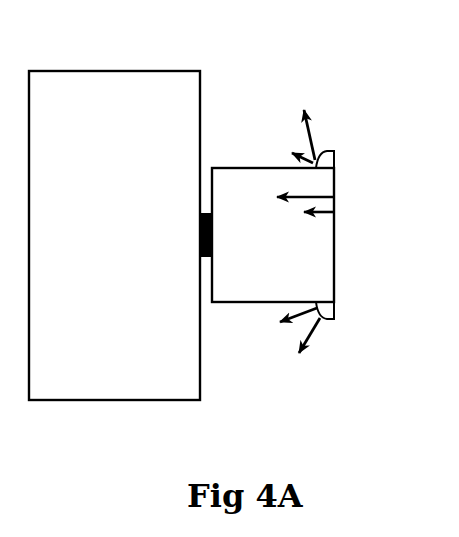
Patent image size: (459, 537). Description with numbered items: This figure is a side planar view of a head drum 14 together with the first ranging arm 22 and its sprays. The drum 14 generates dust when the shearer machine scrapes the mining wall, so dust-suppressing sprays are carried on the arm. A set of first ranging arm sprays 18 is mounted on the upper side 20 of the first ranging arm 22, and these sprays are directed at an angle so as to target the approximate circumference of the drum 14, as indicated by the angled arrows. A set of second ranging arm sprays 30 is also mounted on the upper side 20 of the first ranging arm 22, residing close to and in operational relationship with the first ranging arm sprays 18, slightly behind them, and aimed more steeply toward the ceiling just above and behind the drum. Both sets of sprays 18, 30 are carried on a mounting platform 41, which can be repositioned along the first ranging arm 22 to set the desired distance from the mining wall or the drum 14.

The drum 14 is at (105, 140).
The set of first ranging arm sprays 18 is at (290, 146).
The upper side of the first ranging arm 20 is at (248, 165).
The first ranging arm 22 is at (229, 307).
The set of second ranging arm sprays 30 is at (312, 110).
The mounting platform 41 is at (338, 158).